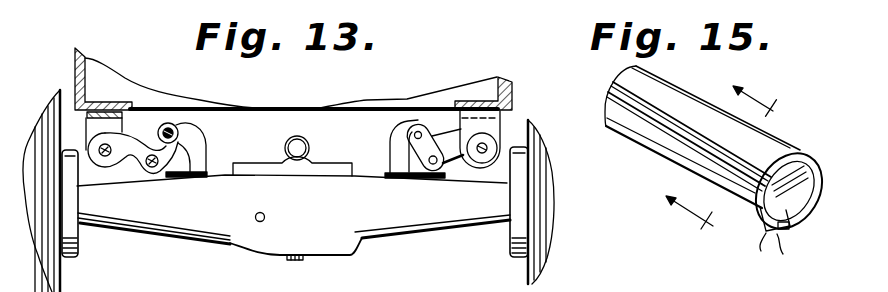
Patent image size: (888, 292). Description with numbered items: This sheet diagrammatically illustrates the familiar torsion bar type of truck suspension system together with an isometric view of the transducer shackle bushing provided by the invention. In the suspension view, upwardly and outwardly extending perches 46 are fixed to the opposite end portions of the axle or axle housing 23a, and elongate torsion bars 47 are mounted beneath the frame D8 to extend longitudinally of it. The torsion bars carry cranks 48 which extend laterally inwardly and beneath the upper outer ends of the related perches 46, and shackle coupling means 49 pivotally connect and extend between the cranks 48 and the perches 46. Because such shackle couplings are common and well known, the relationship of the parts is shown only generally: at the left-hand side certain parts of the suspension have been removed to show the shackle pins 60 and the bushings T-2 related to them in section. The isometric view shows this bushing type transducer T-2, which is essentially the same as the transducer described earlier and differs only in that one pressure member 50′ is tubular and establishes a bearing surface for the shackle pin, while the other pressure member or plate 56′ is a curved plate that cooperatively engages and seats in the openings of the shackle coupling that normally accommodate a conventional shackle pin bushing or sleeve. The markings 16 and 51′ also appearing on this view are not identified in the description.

In FIG. 13, the frame D8 is at (77, 66).
In FIG. 13, the shackle pins 60 is at (181, 127).
In FIG. 13, the bushing type transducer T-2 is at (178, 135).
In FIG. 15, the bushing type transducer T-2 is at (694, 95).
In FIG. 13, the torsion bars 47 is at (105, 157).
In FIG. 13, the cranks 48 is at (138, 157).
In FIG. 13, the perches 46 is at (200, 158).
In FIG. 13, the shackle coupling means 49 is at (396, 151).
In FIG. 13, the axle or axle housing 23a is at (235, 245).
In FIG. 15, the pressure member 50′ is at (615, 108).
In FIG. 15, the pressure member or plate 56′ is at (647, 152).
In FIG. 15, the section line 16 is at (711, 150).
In FIG. 15, the slot 51′ is at (775, 249).